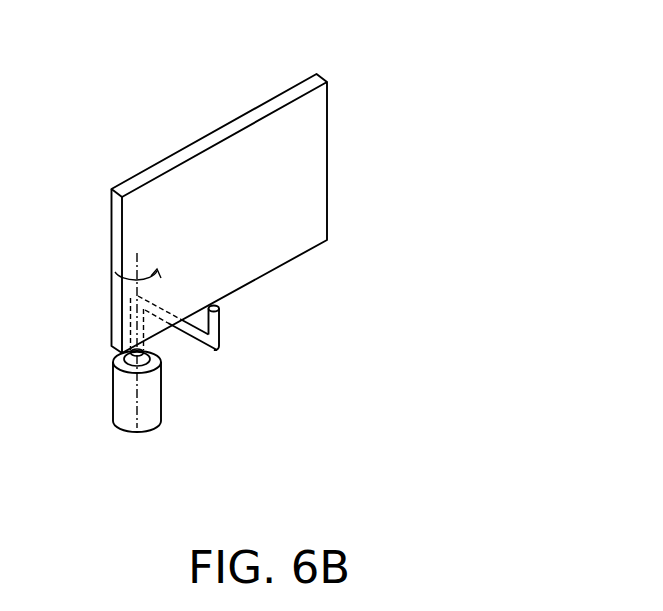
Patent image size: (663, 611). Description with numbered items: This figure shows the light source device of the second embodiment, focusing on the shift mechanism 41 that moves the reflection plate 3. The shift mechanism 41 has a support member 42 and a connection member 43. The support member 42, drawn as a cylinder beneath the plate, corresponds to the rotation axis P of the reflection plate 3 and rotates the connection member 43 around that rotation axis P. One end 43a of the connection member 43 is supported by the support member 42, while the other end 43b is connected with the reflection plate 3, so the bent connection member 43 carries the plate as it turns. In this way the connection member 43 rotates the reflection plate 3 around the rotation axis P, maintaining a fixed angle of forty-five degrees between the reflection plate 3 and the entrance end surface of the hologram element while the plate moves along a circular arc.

The reflection plate 3 is at (321, 74).
The rotation axis P is at (140, 267).
The shift mechanism 41 is at (271, 375).
The support member 42 is at (162, 405).
The connection member 43 is at (217, 340).
The end of the connection member 43a is at (162, 360).
The other end of the connection member 43b is at (220, 308).